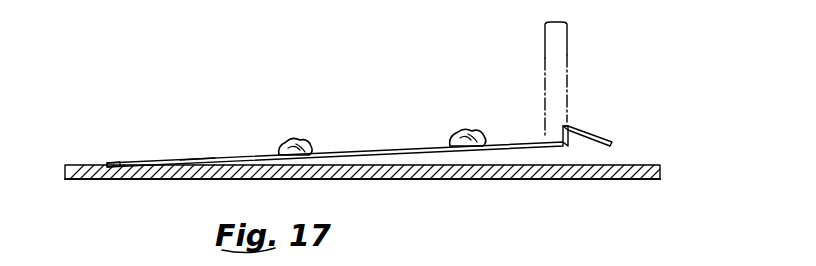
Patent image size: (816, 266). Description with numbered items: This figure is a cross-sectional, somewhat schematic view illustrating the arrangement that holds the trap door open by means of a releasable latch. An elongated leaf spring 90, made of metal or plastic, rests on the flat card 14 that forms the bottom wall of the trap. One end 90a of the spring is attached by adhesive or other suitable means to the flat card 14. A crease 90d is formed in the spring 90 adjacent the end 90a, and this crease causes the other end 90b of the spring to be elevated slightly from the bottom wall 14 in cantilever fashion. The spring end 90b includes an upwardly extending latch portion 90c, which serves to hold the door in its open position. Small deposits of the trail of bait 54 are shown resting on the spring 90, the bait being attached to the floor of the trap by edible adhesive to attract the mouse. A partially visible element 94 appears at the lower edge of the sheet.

The flat card 14 is at (486, 181).
The elongated leaf spring 90 is at (363, 152).
The end of the spring 90a is at (108, 162).
The crease 90d is at (197, 159).
The latch portion 90c is at (558, 134).
The other end of the spring 90b is at (612, 138).
The trail of bait 54 is at (293, 140).
The element 94 is at (684, 259).